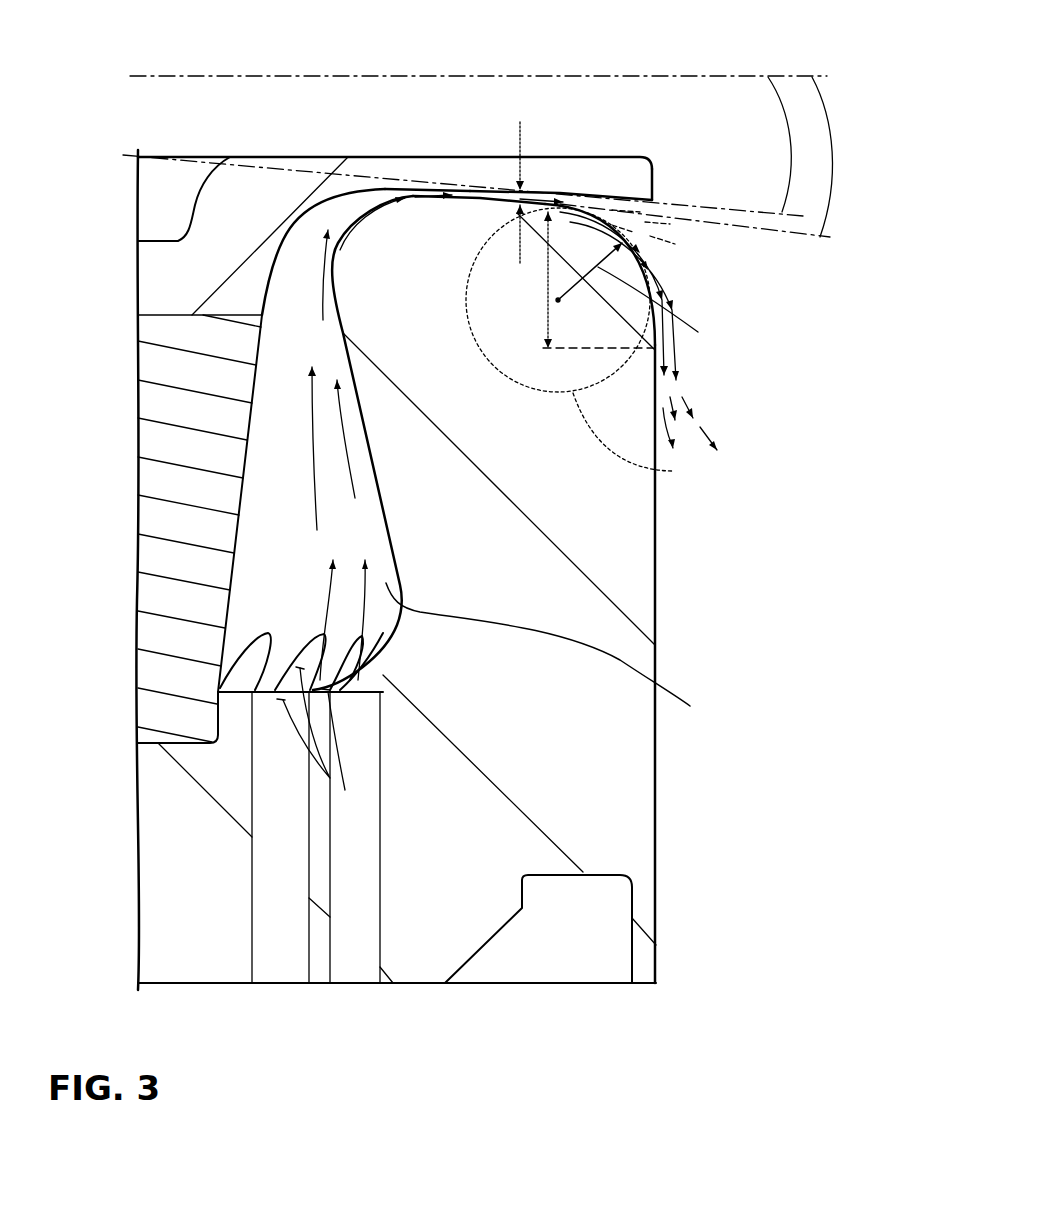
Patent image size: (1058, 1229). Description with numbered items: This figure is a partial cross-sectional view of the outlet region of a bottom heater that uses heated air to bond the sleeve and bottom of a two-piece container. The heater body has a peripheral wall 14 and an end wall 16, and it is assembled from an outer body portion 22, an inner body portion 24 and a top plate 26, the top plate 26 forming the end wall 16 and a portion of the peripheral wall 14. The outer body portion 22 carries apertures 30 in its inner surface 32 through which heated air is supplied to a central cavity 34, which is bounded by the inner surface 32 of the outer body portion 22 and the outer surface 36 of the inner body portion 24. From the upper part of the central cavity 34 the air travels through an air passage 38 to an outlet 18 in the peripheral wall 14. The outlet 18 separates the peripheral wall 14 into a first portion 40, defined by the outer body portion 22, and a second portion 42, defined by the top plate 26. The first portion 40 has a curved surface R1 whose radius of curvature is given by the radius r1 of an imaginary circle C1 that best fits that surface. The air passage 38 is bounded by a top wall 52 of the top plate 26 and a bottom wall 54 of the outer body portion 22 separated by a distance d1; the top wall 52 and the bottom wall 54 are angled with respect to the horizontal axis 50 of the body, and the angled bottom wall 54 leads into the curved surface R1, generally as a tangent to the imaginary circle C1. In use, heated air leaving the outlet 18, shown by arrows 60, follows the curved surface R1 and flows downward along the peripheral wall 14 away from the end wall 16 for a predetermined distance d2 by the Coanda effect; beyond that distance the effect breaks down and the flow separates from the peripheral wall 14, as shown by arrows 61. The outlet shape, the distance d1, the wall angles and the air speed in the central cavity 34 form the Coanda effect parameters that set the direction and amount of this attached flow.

The peripheral wall 14 is at (655, 517).
The end wall 16 is at (400, 157).
The outlet 18 is at (622, 193).
The outer body portion 22 is at (617, 573).
The inner body portion 24 is at (166, 595).
The top plate 26 is at (585, 158).
The apertures 30 is at (285, 702).
The inner surface 32 is at (549, 653).
The central cavity 34 is at (276, 506).
The outer surface 36 is at (240, 535).
The air passage 38 is at (437, 189).
The first portion 40 is at (655, 392).
The second portion 42 is at (655, 194).
The horizontal axis 50 is at (292, 75).
The top wall 52 is at (478, 189).
The bottom wall 54 is at (456, 207).
The arrows 60 is at (325, 455).
The arrows 61 is at (693, 410).
The distance d1 is at (533, 181).
The predetermined distance d2 is at (593, 280).
The curved surface R1 is at (645, 240).
The radius r1 is at (659, 308).
The imaginary circle C1 is at (638, 443).